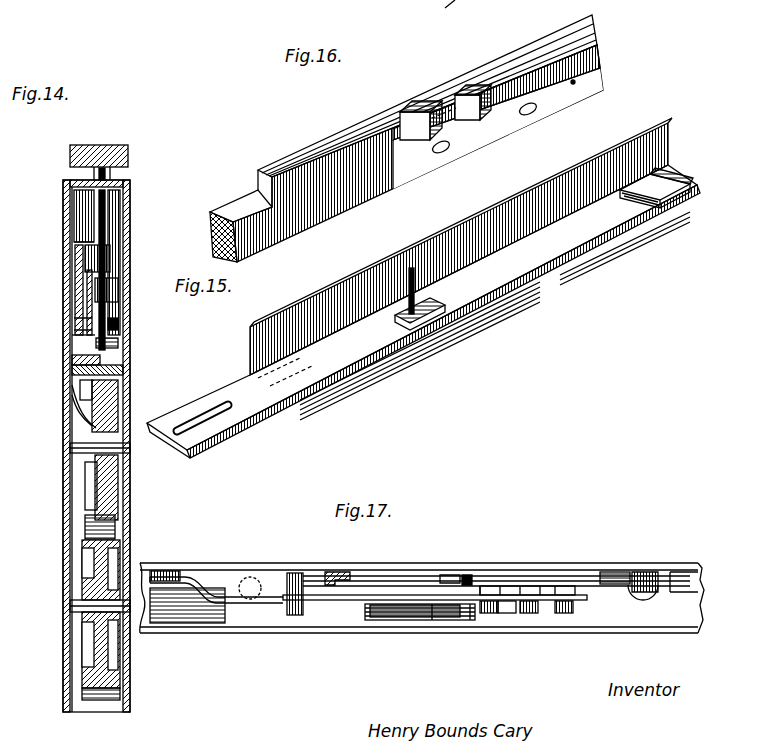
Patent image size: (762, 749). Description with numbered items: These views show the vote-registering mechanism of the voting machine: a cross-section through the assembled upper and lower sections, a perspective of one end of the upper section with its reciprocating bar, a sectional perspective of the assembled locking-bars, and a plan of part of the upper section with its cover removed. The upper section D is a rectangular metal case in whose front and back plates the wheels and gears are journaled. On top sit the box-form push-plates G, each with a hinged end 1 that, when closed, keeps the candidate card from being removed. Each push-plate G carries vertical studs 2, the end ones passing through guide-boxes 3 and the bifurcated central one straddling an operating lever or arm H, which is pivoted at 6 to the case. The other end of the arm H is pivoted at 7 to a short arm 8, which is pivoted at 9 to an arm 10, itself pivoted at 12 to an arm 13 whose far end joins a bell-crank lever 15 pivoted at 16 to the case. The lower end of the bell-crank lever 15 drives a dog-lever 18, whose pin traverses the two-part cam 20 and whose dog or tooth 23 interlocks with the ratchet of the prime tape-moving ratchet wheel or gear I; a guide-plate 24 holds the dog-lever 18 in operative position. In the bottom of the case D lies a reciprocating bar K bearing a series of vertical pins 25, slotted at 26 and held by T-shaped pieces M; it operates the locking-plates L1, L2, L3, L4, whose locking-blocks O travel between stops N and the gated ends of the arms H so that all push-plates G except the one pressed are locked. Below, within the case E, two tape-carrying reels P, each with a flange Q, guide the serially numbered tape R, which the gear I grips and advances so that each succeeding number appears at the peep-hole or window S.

In FIG. 14, the hinged end 1 is at (100, 145).
In FIG. 14, the push-plate G is at (128, 156).
In FIG. 14, the vertical stud 2 is at (112, 176).
In FIG. 17, the vertical stud 2 is at (420, 575).
In FIG. 14, the guide-box 3 is at (92, 197).
In FIG. 17, the guide-box 3 is at (240, 605).
In FIG. 14, the pivot of bell-crank lever 16 is at (118, 219).
In FIG. 17, the pivot of bell-crank lever 16 is at (466, 575).
In FIG. 14, the upper section D is at (63, 251).
In FIG. 15, the upper section D is at (446, 246).
In FIG. 17, the upper section D is at (283, 597).
In FIG. 14, the arm 13 is at (100, 287).
In FIG. 17, the arm 13 is at (338, 580).
In FIG. 14, the short arm 8 is at (90, 277).
In FIG. 14, the bell-crank lever 15 is at (112, 312).
In FIG. 17, the bell-crank lever 15 is at (448, 575).
In FIG. 14, the arm 10 is at (76, 326).
In FIG. 14, the two-part cam 20 is at (112, 322).
In FIG. 17, the two-part cam 20 is at (683, 588).
In FIG. 14, the stop N is at (70, 340).
In FIG. 17, the stop N is at (545, 586).
In FIG. 14, the pivot 9 is at (72, 344).
In FIG. 14, the dog-lever 18 is at (118, 346).
In FIG. 17, the dog-lever 18 is at (605, 576).
In FIG. 14, the vertical pin 25 is at (95, 361).
In FIG. 15, the vertical pin 25 is at (424, 293).
In FIG. 14, the dog or tooth 23 is at (110, 375).
In FIG. 16, the dog or tooth 23 is at (440, 13).
In FIG. 14, the peep-hole or window S is at (66, 397).
In FIG. 14, the prime tape-moving ratchet wheel or gear I is at (112, 402).
In FIG. 14, the case of lower section E is at (72, 507).
In FIG. 14, the flange Q is at (100, 530).
In FIG. 14, the tape R is at (92, 528).
In FIG. 14, the tape-carrying reel P is at (92, 657).
In FIG. 16, the locking-plate L1 is at (603, 79).
In FIG. 17, the locking-plate L1 is at (400, 618).
In FIG. 16, the locking-plate L2 is at (600, 52).
In FIG. 17, the locking-plate L2 is at (432, 618).
In FIG. 16, the locking-plate L3 is at (594, 23).
In FIG. 17, the locking-plate L3 is at (470, 618).
In FIG. 16, the locking-plate L4 is at (552, 46).
In FIG. 17, the locking-plate L4 is at (498, 614).
In FIG. 16, the locking-block O is at (478, 104).
In FIG. 17, the locking-block O is at (500, 588).
In FIG. 15, the reciprocating bar K is at (423, 311).
In FIG. 15, the T-shaped piece M is at (655, 178).
In FIG. 15, the slot 26 is at (688, 166).
In FIG. 17, the operating lever or arm H is at (195, 605).
In FIG. 17, the pivot 7 is at (172, 590).
In FIG. 17, the pivot 6 is at (293, 612).
In FIG. 17, the pivot 12 is at (345, 600).
In FIG. 17, the guide-plate 24 is at (645, 572).